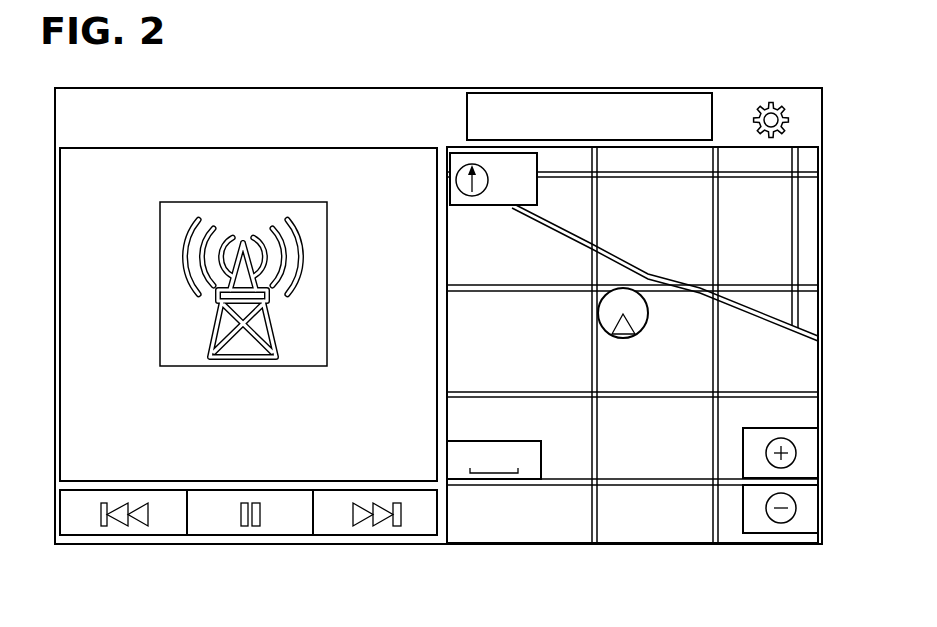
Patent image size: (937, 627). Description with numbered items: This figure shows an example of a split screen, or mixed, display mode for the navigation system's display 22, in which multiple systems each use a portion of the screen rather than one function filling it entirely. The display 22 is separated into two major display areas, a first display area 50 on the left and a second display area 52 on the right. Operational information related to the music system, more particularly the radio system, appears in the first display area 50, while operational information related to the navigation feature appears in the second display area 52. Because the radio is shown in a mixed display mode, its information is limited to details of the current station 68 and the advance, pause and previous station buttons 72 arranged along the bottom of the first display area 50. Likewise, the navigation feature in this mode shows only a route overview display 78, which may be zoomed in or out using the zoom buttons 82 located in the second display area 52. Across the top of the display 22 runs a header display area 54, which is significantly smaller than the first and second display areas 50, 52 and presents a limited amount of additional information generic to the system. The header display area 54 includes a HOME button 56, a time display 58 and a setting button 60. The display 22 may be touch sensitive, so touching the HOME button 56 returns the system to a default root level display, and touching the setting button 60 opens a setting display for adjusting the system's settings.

The display 22 is at (637, 74).
The first display area 50 is at (55, 199).
The second display area 52 is at (655, 319).
The header display area 54 is at (248, 126).
The HOME button 56 is at (188, 105).
The time display 58 is at (475, 102).
The setting button 60 is at (771, 103).
The details of the current station 68 is at (150, 277).
The advance, pause and previous station buttons 72 is at (168, 527).
The route overview display 78 is at (762, 224).
The zoom buttons 82 is at (815, 515).